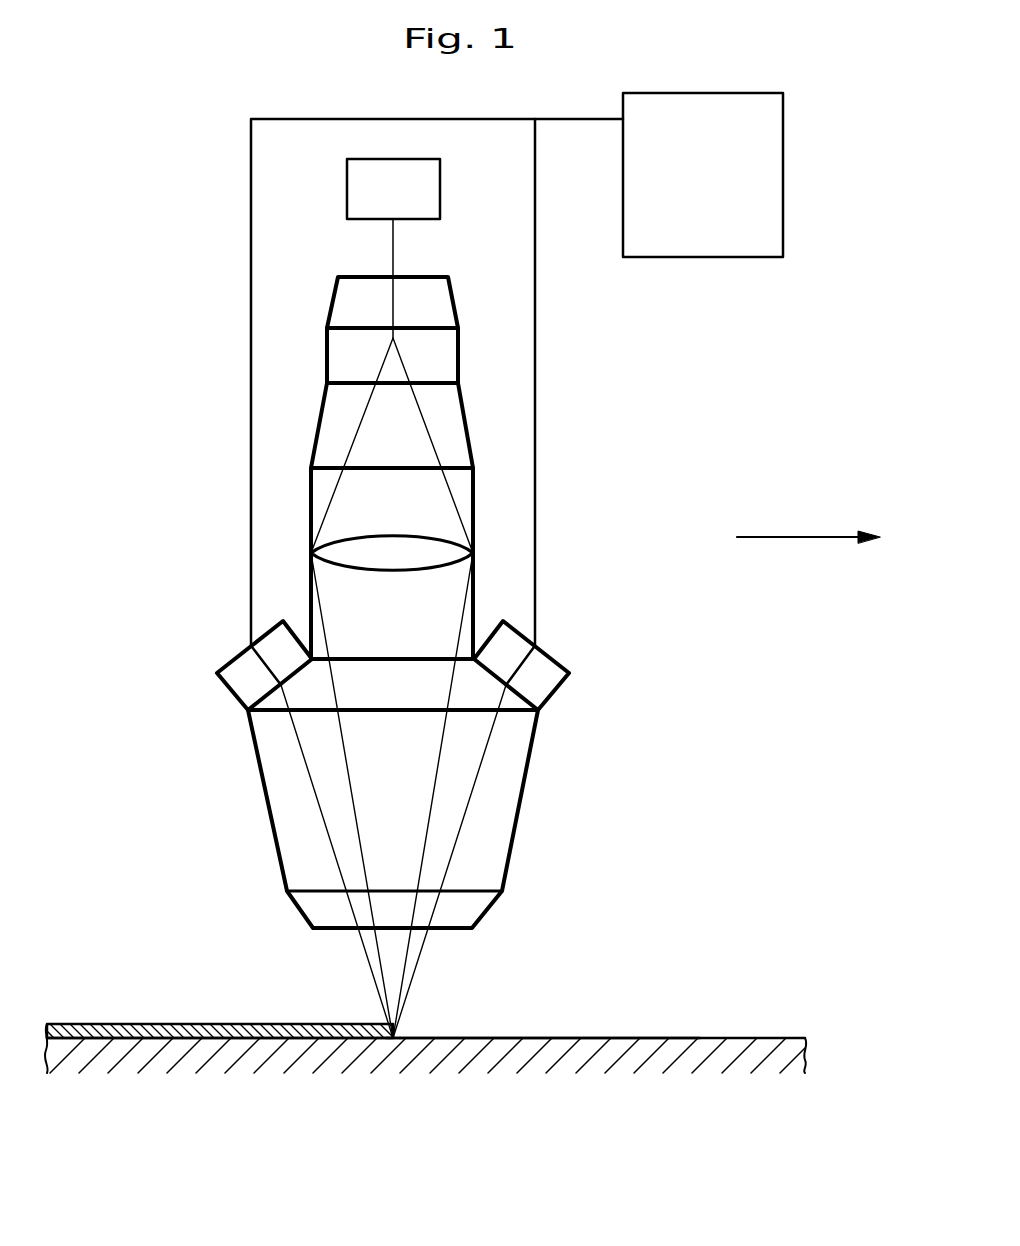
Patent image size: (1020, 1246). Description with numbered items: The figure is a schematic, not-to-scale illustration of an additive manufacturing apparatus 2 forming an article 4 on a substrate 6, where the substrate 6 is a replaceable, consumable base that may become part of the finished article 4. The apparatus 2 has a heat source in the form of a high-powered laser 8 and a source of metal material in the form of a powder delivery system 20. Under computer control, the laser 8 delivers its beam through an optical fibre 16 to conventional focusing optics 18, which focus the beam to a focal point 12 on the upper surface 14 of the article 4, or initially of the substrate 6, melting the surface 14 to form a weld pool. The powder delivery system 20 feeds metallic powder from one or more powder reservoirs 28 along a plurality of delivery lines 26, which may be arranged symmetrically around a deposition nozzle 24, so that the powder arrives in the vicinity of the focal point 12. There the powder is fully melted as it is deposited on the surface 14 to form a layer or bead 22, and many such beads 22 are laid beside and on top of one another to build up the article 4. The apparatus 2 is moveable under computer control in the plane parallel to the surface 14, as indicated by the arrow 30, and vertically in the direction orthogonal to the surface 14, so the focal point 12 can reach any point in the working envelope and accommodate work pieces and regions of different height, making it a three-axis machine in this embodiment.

The additive manufacturing apparatus 2 is at (173, 243).
The article 4 is at (118, 1012).
The substrate 6 is at (622, 1048).
The high-powered laser 8 is at (365, 188).
The focal point 12 is at (393, 1038).
The upper surface 14 is at (532, 1038).
The optical fibre 16 is at (394, 241).
The focusing optics 18 is at (357, 558).
The powder delivery system 20 is at (706, 262).
The bead 22 is at (252, 1030).
The deposition nozzle 24 is at (302, 913).
The delivery lines 26 is at (308, 783).
The powder reservoir 28 is at (708, 108).
The arrow 30 is at (788, 540).